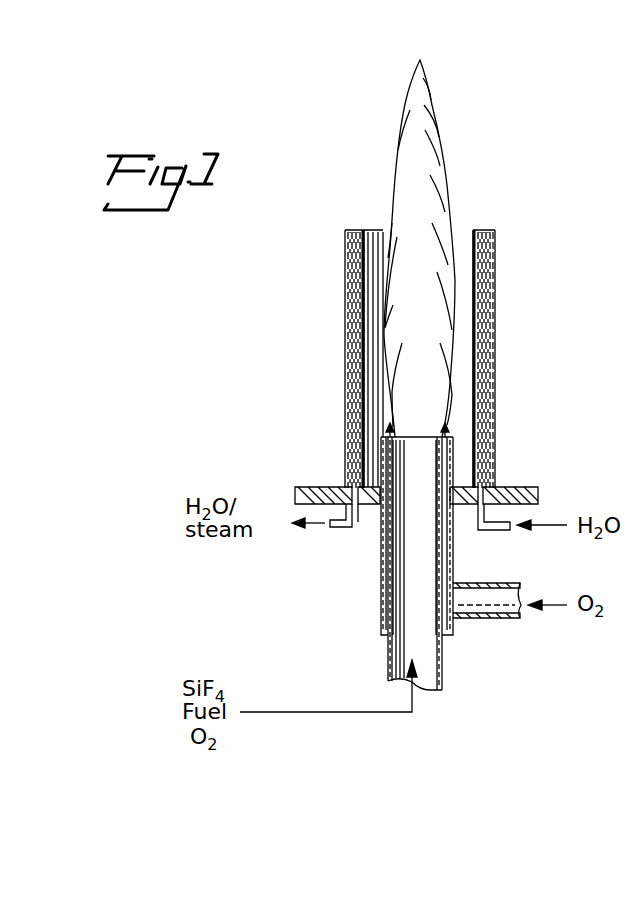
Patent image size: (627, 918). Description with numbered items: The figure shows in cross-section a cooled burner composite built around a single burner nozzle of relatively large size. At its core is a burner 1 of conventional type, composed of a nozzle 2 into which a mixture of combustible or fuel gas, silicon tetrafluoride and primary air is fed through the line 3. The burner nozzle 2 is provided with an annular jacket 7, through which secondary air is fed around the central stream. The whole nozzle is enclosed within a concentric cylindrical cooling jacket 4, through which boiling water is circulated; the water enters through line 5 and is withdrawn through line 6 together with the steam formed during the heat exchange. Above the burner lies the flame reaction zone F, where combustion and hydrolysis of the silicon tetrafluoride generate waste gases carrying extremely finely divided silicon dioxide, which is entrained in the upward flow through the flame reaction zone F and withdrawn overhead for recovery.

The burner 1 is at (403, 567).
The nozzle 2 is at (450, 462).
The line 3 is at (443, 662).
The cylindrical cooling jacket 4 is at (345, 285).
The line 5 is at (500, 520).
The line 6 is at (343, 530).
The annular jacket 7 is at (378, 560).
The flame reaction zone F is at (412, 186).